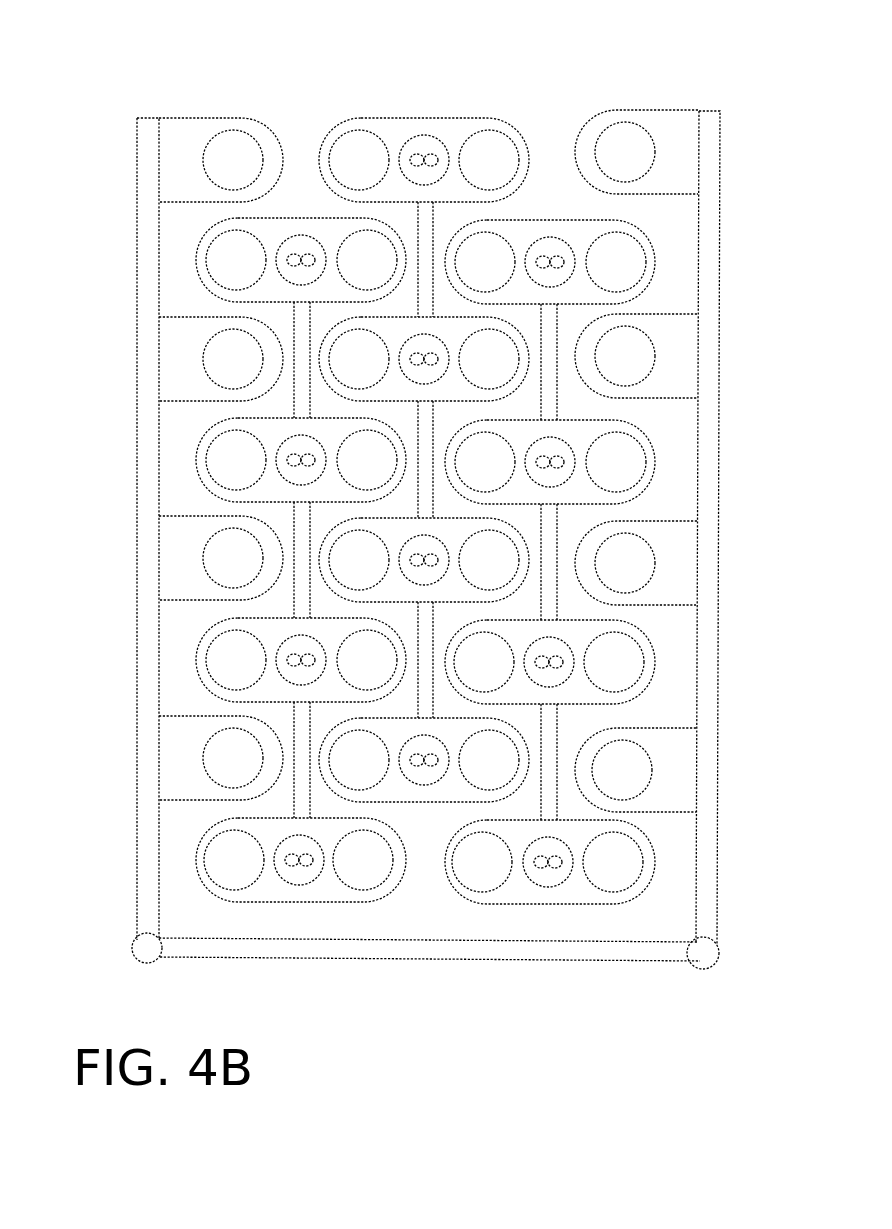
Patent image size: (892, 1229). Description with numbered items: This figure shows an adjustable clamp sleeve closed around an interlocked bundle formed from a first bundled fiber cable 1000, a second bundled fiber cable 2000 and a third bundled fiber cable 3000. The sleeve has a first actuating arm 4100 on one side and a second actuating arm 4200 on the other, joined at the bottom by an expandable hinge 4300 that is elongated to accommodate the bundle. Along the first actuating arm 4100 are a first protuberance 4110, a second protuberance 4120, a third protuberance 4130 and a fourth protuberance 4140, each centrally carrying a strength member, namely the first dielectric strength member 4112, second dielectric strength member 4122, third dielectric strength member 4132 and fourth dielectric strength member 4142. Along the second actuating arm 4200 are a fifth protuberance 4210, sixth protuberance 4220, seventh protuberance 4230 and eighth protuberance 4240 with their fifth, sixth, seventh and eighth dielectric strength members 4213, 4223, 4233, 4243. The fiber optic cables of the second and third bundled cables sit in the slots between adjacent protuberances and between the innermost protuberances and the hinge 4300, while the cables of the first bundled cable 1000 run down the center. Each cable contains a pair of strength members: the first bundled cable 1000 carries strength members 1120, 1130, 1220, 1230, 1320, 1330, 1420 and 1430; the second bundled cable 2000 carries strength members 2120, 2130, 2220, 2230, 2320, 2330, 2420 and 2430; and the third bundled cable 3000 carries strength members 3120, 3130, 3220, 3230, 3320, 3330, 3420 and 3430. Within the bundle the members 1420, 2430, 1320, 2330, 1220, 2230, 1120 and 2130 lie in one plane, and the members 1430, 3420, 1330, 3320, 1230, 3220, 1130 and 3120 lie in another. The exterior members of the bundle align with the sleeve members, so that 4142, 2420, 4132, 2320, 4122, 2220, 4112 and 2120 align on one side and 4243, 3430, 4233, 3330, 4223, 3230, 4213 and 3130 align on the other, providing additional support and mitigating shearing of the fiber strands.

The first bundled fiber cable 1000 is at (428, 118).
The second bundled fiber cable 2000 is at (302, 218).
The third bundled fiber cable 3000 is at (552, 220).
The first actuating arm 4100 is at (138, 468).
The second actuating arm 4200 is at (717, 483).
The hinge 4300 is at (347, 958).
The dielectric strength member 1120 is at (359, 760).
The dielectric strength member 1130 is at (489, 760).
The dielectric strength member 1220 is at (359, 560).
The dielectric strength member 1230 is at (489, 560).
The dielectric strength member 1320 is at (359, 359).
The dielectric strength member 1330 is at (489, 359).
The dielectric strength member 1420 is at (359, 160).
The dielectric strength member 1430 is at (489, 160).
The dielectric strength member 2120 is at (234, 860).
The dielectric strength member 2130 is at (363, 860).
The dielectric strength member 2220 is at (236, 660).
The dielectric strength member 2230 is at (367, 660).
The dielectric strength member 2320 is at (236, 460).
The dielectric strength member 2330 is at (367, 460).
The dielectric strength member 2420 is at (236, 260).
The dielectric strength member 2430 is at (367, 260).
The dielectric strength member 3120 is at (482, 862).
The dielectric strength member 3130 is at (613, 862).
The dielectric strength member 3220 is at (484, 662).
The dielectric strength member 3230 is at (614, 662).
The dielectric strength member 3320 is at (485, 462).
The dielectric strength member 3330 is at (616, 462).
The dielectric strength member 3420 is at (485, 262).
The dielectric strength member 3430 is at (616, 262).
The first protuberance 4110 is at (221, 758).
The first dielectric strength member 4112 is at (233, 758).
The second protuberance 4120 is at (221, 558).
The second dielectric strength member 4122 is at (233, 558).
The third protuberance 4130 is at (221, 359).
The third dielectric strength member 4132 is at (233, 359).
The fourth protuberance 4140 is at (221, 160).
The fourth dielectric strength member 4142 is at (233, 160).
The fifth protuberance 4210 is at (637, 770).
The fifth dielectric strength member 4213 is at (622, 770).
The sixth protuberance 4220 is at (637, 563).
The sixth dielectric strength member 4223 is at (625, 563).
The seventh protuberance 4230 is at (637, 356).
The seventh dielectric strength member 4233 is at (625, 356).
The eighth protuberance 4240 is at (637, 152).
The eighth dielectric strength member 4243 is at (625, 152).